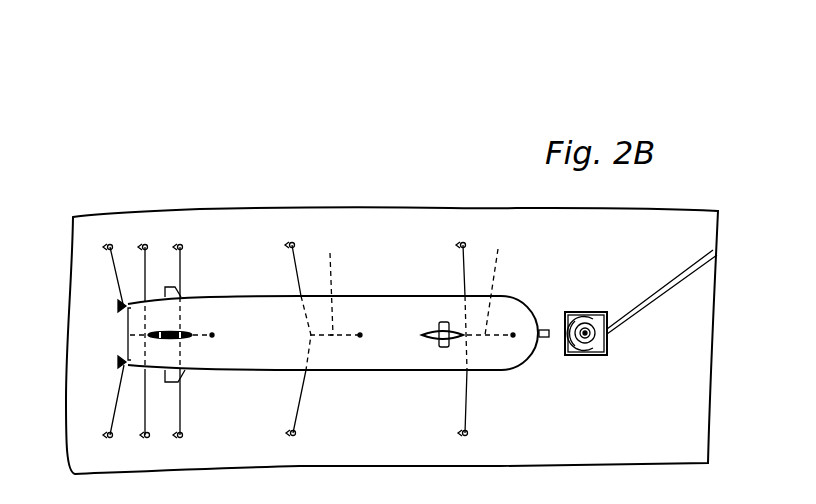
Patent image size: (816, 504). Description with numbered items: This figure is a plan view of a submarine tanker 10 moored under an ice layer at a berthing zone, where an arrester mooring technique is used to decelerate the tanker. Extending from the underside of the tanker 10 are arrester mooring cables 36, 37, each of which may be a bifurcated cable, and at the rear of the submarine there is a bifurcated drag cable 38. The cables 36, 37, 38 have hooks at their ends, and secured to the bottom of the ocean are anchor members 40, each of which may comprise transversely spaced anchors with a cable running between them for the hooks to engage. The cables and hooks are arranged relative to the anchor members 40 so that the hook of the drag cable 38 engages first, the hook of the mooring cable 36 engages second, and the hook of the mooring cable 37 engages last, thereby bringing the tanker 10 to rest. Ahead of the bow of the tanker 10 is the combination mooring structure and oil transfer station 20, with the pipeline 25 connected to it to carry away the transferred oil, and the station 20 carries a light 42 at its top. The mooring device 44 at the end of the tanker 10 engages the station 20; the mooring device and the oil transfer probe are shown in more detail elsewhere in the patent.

The submarine tanker 10 is at (378, 292).
The combination mooring structure and oil transfer station 20 is at (592, 305).
The pipeline 25 is at (675, 281).
The arrester mooring cable 36 is at (325, 285).
The arrester mooring cable 37 is at (495, 284).
The bifurcated drag cable 38 is at (127, 333).
The anchor member 40 is at (113, 244).
The light 42 is at (585, 338).
The mooring device 44 is at (544, 330).